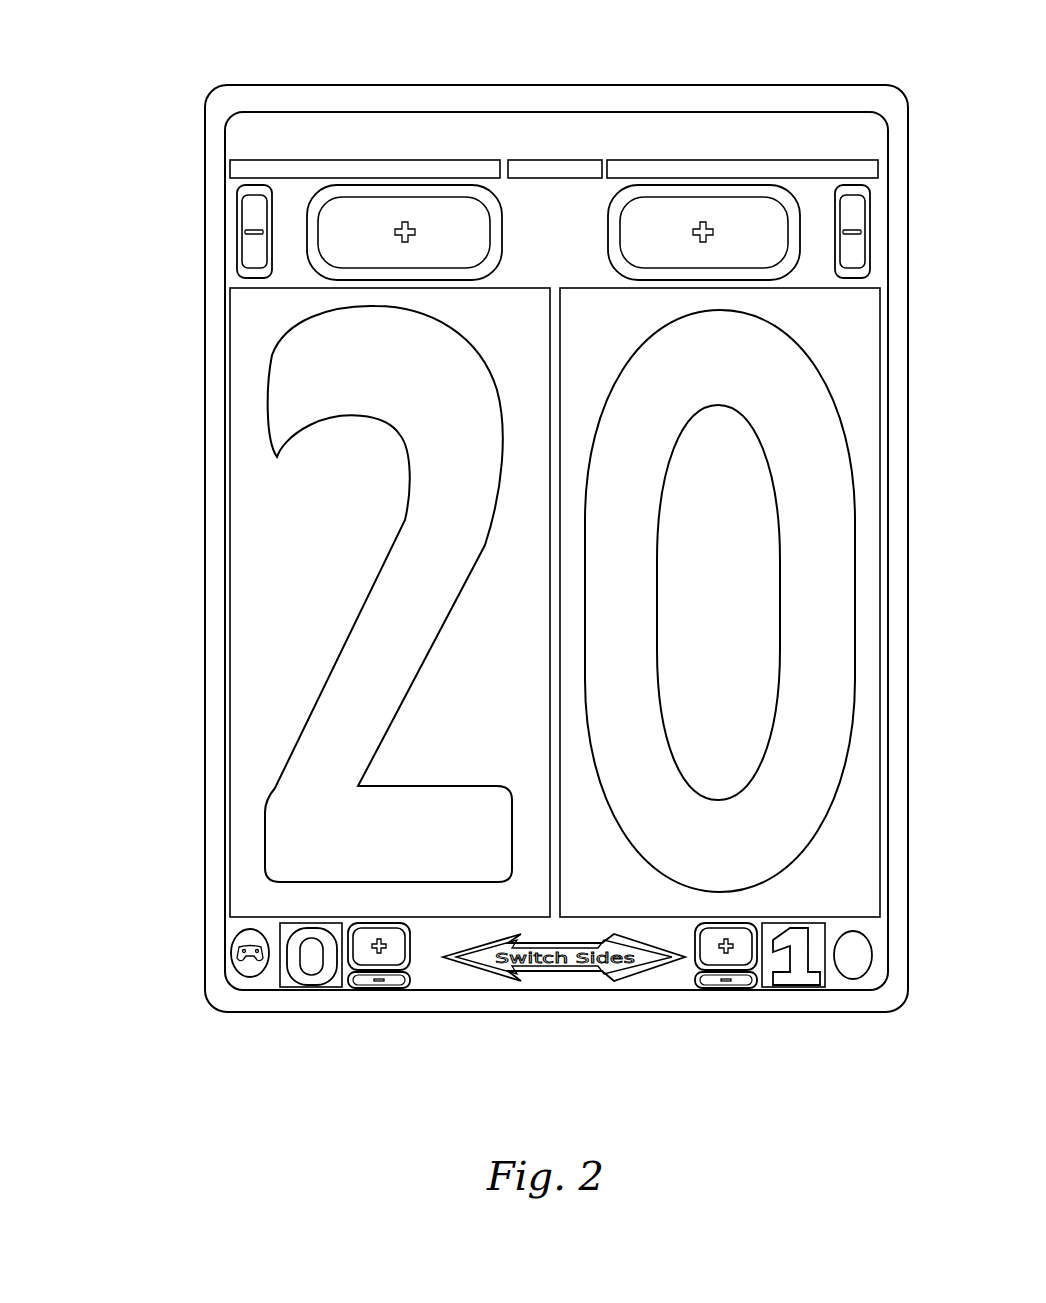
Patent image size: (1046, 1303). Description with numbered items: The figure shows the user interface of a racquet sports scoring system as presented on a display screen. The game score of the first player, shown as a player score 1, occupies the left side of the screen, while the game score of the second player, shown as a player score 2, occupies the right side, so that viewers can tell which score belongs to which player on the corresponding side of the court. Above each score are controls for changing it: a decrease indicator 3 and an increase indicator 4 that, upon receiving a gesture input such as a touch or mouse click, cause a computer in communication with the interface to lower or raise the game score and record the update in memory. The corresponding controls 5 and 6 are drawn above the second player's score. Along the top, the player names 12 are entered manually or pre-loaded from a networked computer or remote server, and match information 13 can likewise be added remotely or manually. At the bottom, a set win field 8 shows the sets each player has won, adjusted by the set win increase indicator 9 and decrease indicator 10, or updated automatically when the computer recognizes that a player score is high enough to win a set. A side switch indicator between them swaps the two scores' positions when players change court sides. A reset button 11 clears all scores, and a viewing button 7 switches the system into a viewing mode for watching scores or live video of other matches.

The player score 1 is at (108, 250).
The player score 2 is at (862, 580).
The decrease indicator 3 is at (237, 215).
The increase indicator 4 is at (437, 197).
The second name increment button 5 is at (754, 210).
The second name decrement button 6 is at (835, 205).
The viewing button 7 is at (247, 980).
The set win field 8 is at (287, 983).
The set win increase indicator 9 is at (410, 955).
The set win decrease indicator 10 is at (365, 990).
The reset button 11 is at (865, 975).
The player names 12 is at (298, 158).
The match information 13 is at (534, 160).